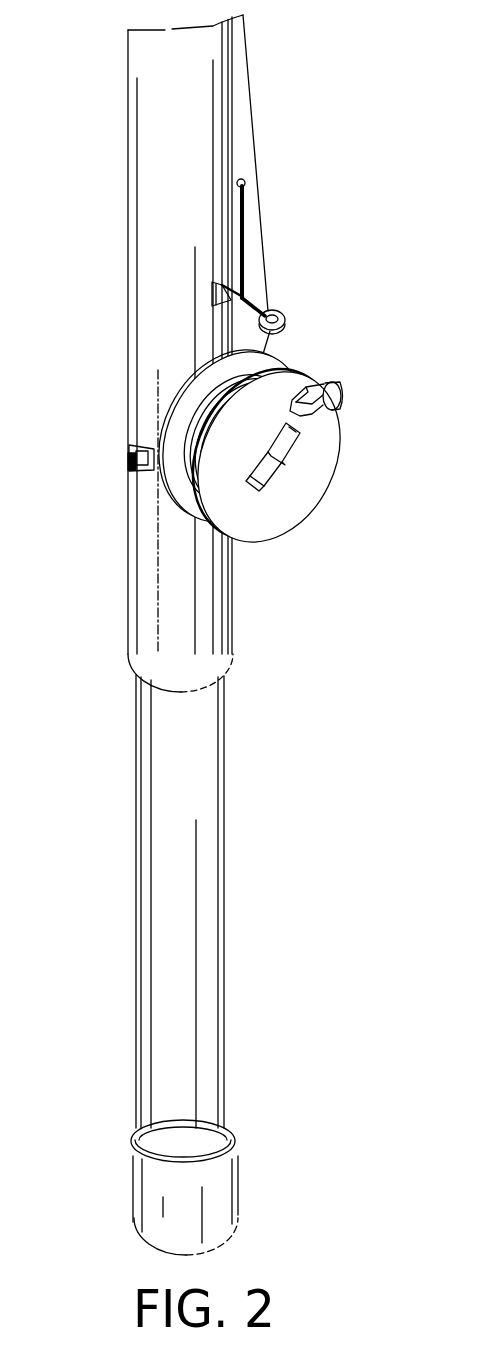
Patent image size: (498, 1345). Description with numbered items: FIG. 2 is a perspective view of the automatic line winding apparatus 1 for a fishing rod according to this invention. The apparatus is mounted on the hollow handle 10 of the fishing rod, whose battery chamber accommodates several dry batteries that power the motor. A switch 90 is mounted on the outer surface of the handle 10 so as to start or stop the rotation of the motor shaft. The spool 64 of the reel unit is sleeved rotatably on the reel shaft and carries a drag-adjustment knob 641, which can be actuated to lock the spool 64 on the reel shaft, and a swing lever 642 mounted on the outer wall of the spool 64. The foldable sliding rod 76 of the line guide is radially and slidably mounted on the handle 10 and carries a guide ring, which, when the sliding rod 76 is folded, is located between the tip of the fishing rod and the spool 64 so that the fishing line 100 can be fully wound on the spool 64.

The pole assembly 1 is at (122, 210).
The hollow handle 10 is at (155, 297).
The fishing line 100 is at (258, 164).
The foldable sliding rod 76 is at (248, 250).
The switch 90 is at (129, 456).
The spool 64 is at (318, 441).
The drag-adjustment knob 641 is at (280, 458).
The swing lever 642 is at (323, 383).